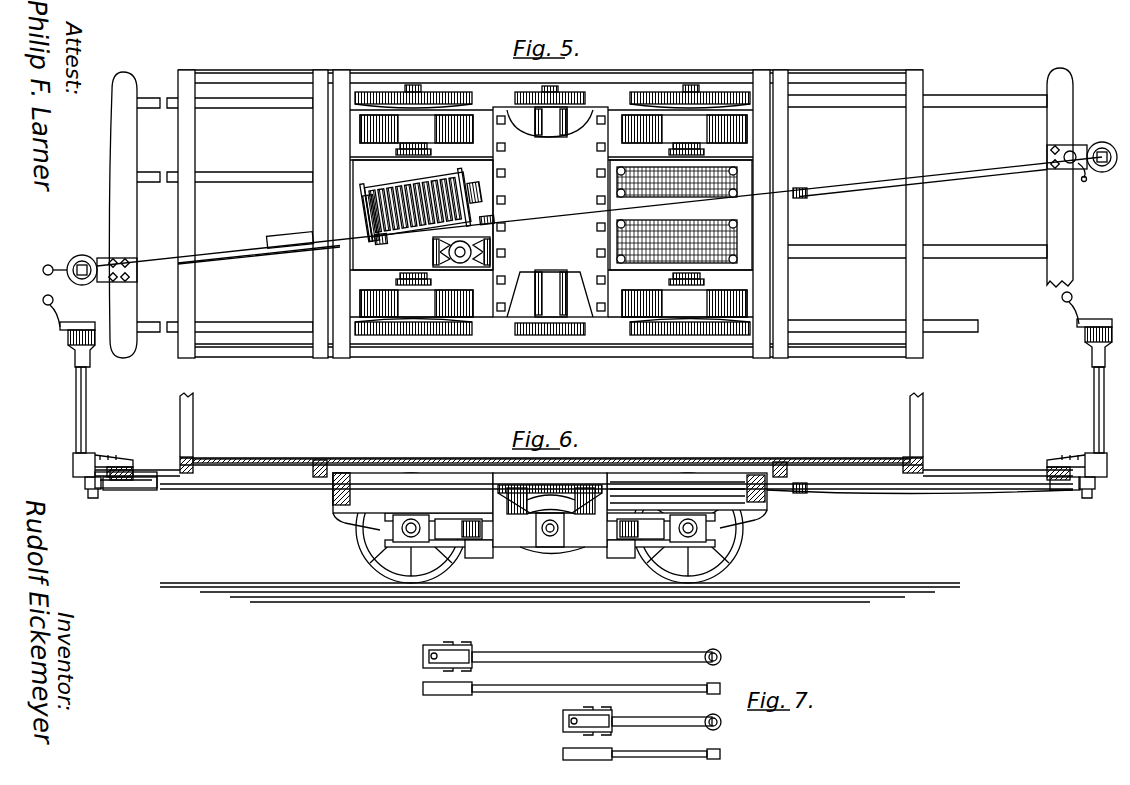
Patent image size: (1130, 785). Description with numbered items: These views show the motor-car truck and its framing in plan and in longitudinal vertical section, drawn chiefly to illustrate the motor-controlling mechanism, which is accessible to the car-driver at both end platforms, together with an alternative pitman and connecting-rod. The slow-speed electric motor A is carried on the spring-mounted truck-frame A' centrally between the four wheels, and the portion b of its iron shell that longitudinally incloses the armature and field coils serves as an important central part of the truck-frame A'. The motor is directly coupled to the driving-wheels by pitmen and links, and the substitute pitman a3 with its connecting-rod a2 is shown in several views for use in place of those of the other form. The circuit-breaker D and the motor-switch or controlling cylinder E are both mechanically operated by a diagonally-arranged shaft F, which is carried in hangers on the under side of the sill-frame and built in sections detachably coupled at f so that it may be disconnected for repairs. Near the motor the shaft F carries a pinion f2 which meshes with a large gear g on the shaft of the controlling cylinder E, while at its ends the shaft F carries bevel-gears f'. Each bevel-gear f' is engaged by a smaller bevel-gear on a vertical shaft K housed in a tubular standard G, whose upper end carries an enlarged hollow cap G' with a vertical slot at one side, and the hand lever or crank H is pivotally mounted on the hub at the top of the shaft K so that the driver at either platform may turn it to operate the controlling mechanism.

In FIG. 5, the electric motor A is at (550, 212).
In FIG. 6, the electric motor A is at (550, 513).
In FIG. 5, the truck-frame A' is at (552, 210).
In FIG. 6, the truck-frame A' is at (549, 509).
In FIG. 5, the motor-frame portion b is at (615, 280).
In FIG. 6, the motor-frame portion b is at (551, 517).
In FIG. 5, the motor-switch or controlling cylinder E is at (423, 203).
In FIG. 5, the large gear g is at (366, 203).
In FIG. 5, the detachable coupling f is at (643, 199).
In FIG. 6, the detachable coupling f is at (800, 497).
In FIG. 5, the pinion f2 is at (381, 248).
In FIG. 5, the circuit-breaker D is at (453, 252).
In FIG. 5, the diagonally-arranged shaft F is at (599, 211).
In FIG. 6, the diagonally-arranged shaft F is at (584, 491).
In FIG. 6, the tubular standard G is at (599, 410).
In FIG. 5, the hollow cap G' is at (597, 213).
In FIG. 6, the hollow cap G' is at (593, 343).
In FIG. 5, the hand lever or crank H is at (568, 219).
In FIG. 6, the hand lever or crank H is at (566, 309).
In FIG. 6, the vertical shaft K is at (77, 480).
In FIG. 6, the bevel-gears f' is at (597, 498).
In FIG. 7, the pitman a3 is at (572, 663).
In FIG. 7, the connecting-rod a2 is at (642, 733).